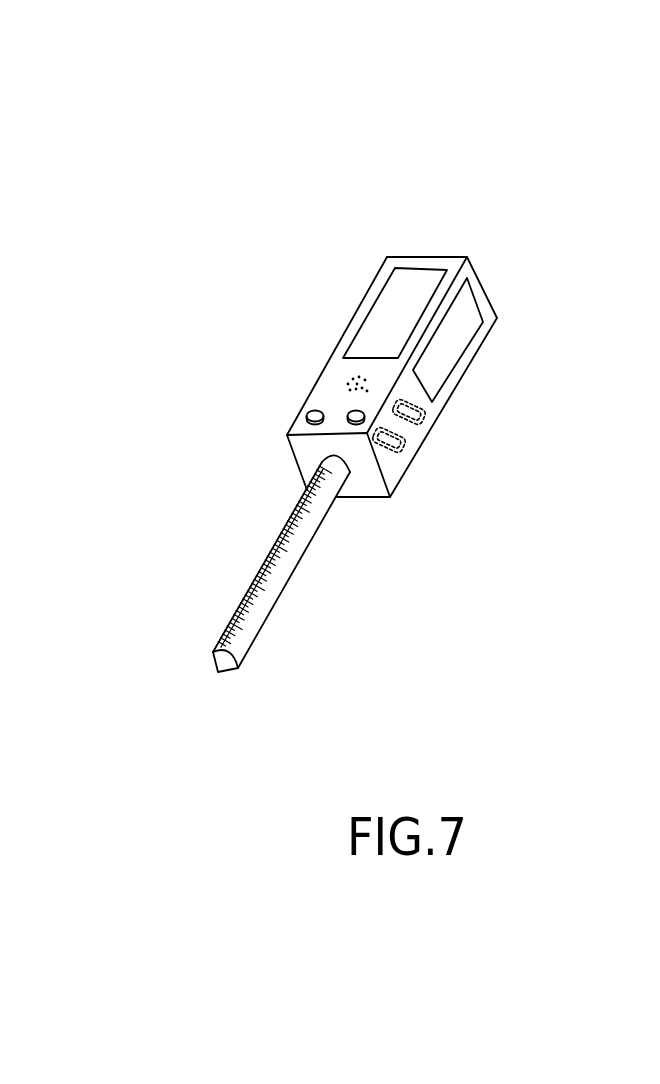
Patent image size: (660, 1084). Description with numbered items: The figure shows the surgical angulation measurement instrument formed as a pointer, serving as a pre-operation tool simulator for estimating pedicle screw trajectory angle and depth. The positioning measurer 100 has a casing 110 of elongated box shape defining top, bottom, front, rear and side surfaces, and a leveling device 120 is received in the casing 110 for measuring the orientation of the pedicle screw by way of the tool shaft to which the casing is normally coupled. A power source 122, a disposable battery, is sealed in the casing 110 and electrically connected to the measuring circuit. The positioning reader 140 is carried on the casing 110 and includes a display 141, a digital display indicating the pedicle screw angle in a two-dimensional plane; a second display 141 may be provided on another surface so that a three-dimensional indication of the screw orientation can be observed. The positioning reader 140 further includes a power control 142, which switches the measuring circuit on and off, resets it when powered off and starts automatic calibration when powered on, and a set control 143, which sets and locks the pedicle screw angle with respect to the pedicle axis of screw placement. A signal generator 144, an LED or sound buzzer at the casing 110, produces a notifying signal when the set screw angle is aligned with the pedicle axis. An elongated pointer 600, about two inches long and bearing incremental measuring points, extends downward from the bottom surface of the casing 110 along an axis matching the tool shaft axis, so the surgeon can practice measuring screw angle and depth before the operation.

The positioning measurer 100 is at (626, 602).
The casing 110 is at (308, 462).
The leveling device 120 is at (412, 413).
The power source 122 is at (395, 443).
The positioning reader 140 is at (458, 52).
The display 141 is at (395, 307).
The power control 142 is at (308, 412).
The set control 143 is at (348, 412).
The signal generator 144 is at (357, 378).
The pointer 600 is at (262, 608).